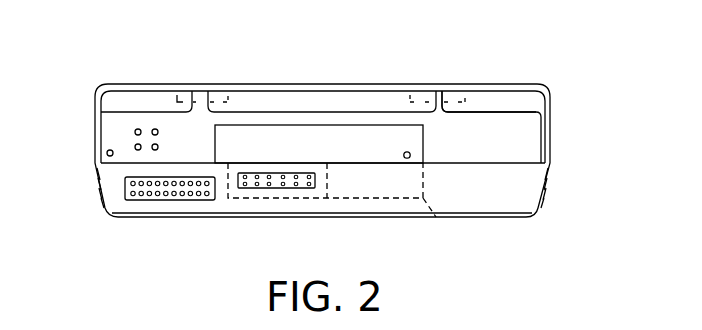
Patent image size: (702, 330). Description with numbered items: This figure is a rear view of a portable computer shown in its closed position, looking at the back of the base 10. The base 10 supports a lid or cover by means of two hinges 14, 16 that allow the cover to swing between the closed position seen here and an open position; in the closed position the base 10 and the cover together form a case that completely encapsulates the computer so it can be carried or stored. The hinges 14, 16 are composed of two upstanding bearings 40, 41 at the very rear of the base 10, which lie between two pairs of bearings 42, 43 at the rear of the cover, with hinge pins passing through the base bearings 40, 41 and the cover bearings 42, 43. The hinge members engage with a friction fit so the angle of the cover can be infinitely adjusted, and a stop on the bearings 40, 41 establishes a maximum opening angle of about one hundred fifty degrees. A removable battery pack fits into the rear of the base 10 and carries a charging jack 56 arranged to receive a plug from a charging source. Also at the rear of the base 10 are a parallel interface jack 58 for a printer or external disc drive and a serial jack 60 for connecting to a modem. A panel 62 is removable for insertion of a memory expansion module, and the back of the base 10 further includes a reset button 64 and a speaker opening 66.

The base 10 is at (552, 188).
The hinge 14 is at (198, 93).
The hinge 16 is at (438, 93).
The upstanding bearing 40 is at (205, 95).
The upstanding bearing 41 is at (437, 92).
The cover bearings 42 is at (225, 92).
The cover bearings 43 is at (417, 90).
The charging jack 56 is at (406, 158).
The parallel interface jack 58 is at (170, 198).
The serial jack 60 is at (273, 182).
The panel 62 is at (417, 194).
The reset button 64 is at (106, 153).
The speaker opening 66 is at (143, 127).